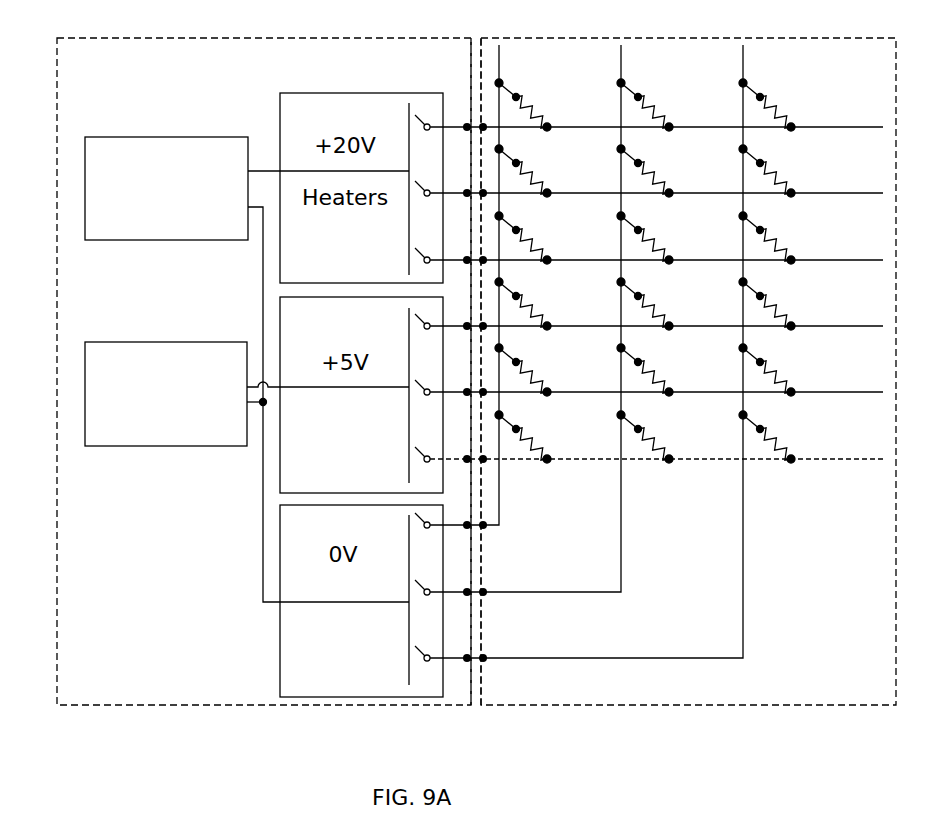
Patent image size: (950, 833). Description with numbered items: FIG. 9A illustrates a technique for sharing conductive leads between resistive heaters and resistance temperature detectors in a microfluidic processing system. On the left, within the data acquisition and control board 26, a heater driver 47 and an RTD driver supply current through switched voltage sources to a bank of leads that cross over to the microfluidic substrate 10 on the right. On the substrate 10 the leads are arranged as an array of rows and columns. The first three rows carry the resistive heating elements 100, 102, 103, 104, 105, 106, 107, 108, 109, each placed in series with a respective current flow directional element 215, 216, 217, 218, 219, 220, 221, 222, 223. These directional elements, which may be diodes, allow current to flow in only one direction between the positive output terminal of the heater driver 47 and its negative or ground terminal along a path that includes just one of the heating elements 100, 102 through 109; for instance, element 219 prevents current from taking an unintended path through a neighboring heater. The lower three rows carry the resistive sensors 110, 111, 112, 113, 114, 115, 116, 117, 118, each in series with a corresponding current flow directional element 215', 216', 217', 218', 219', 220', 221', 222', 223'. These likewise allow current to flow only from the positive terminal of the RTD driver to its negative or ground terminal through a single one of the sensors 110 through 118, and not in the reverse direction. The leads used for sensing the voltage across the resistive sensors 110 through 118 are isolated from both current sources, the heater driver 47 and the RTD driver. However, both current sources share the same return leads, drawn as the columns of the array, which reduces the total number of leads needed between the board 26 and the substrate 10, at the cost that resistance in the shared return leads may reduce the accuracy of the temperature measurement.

The data acquisition and control board 26 is at (113, 37).
The microfluidic substrate 10 is at (537, 37).
The heater driver 47 is at (137, 136).
The current flow directional element 215 is at (539, 99).
The current flow directional element 216 is at (661, 99).
The current flow directional element 217 is at (783, 99).
The current flow directional element 218 is at (539, 165).
The current flow directional element 219 is at (661, 165).
The current flow directional element 220 is at (783, 165).
The current flow directional element 221 is at (539, 232).
The current flow directional element 222 is at (661, 232).
The current flow directional element 223 is at (783, 232).
The current flow directional element 215' is at (542, 298).
The current flow directional element 216' is at (664, 298).
The current flow directional element 217' is at (786, 298).
The current flow directional element 218' is at (542, 364).
The current flow directional element 219' is at (664, 364).
The current flow directional element 220' is at (786, 364).
The current flow directional element 221' is at (542, 431).
The current flow directional element 222' is at (664, 431).
The current flow directional element 223' is at (786, 431).
The resistive heating element 100 is at (553, 119).
The resistive heating element 102 is at (675, 119).
The resistive heating element 103 is at (797, 119).
The resistive heating element 104 is at (553, 185).
The resistive heating element 105 is at (675, 185).
The resistive heating element 106 is at (797, 185).
The resistive heating element 107 is at (553, 252).
The resistive heating element 108 is at (675, 252).
The resistive heating element 109 is at (797, 252).
The resistive sensor 110 is at (553, 318).
The resistive sensor 111 is at (675, 318).
The resistive sensor 112 is at (797, 318).
The resistive sensor 113 is at (553, 384).
The resistive sensor 114 is at (675, 384).
The resistive sensor 115 is at (797, 384).
The resistive sensor 116 is at (553, 451).
The resistive sensor 117 is at (675, 451).
The resistive sensor 118 is at (797, 451).